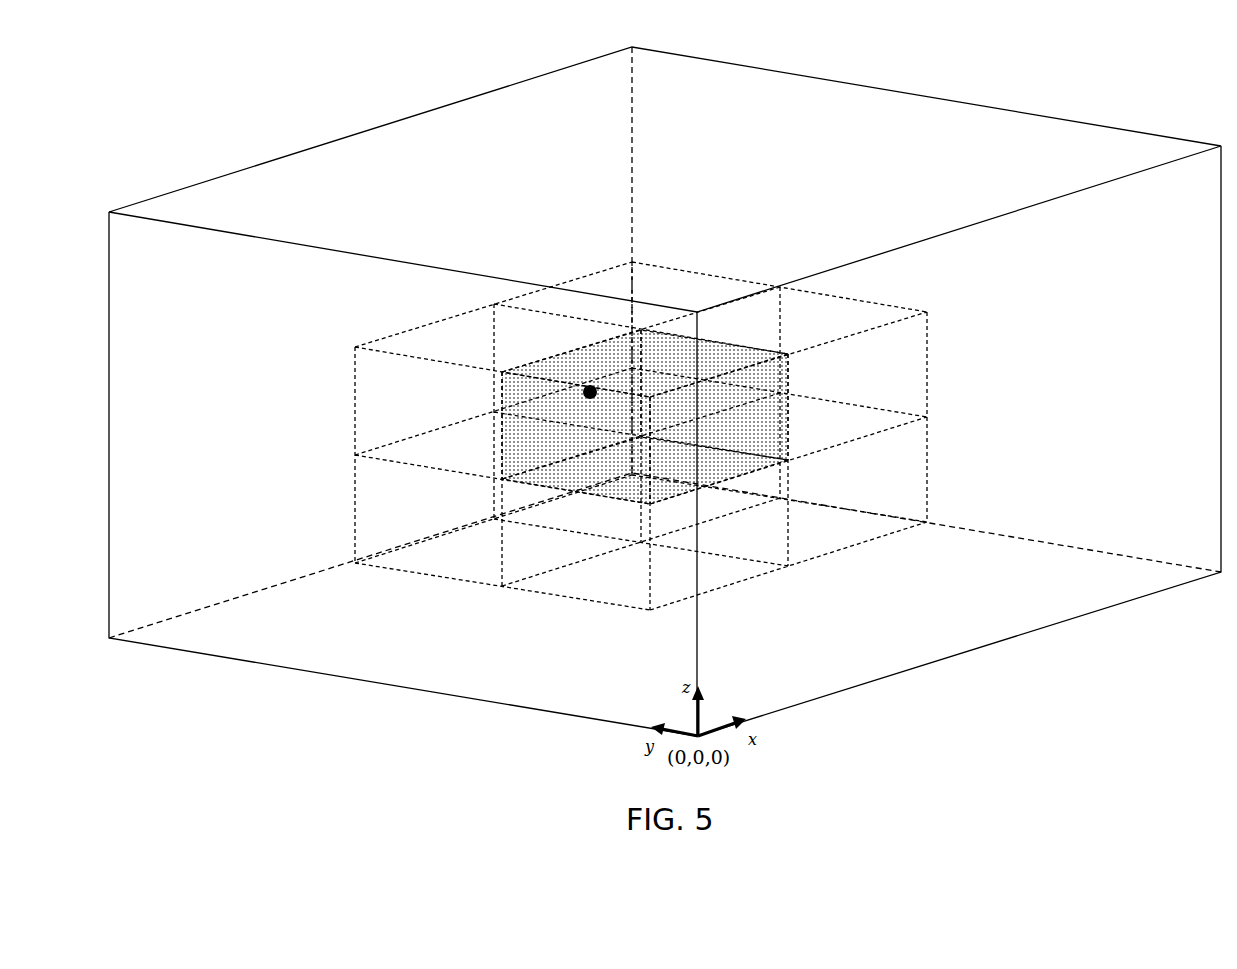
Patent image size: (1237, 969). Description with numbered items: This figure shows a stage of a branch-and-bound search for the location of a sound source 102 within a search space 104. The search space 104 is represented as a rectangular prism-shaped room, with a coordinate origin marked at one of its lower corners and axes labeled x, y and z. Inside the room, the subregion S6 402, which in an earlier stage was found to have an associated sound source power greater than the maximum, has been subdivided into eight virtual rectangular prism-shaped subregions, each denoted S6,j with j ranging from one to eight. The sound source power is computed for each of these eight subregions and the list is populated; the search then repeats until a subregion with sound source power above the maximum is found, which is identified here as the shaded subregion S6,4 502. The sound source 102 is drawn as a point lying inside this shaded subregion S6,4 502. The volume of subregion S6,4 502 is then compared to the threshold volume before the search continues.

The search space 104 is at (862, 86).
The subregion S6 402 is at (705, 274).
The subregion S6,4 502 is at (720, 352).
The sound source 102 is at (590, 392).